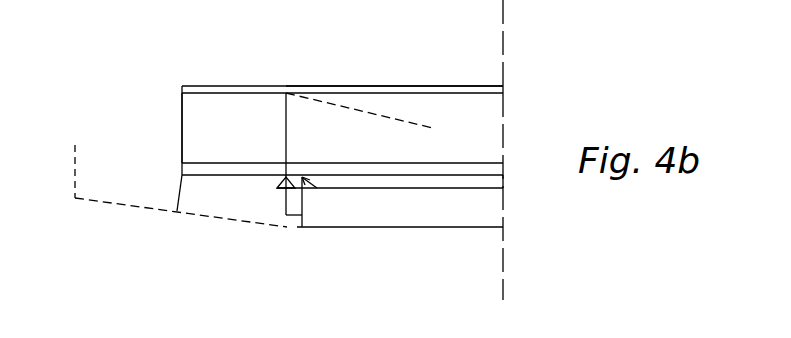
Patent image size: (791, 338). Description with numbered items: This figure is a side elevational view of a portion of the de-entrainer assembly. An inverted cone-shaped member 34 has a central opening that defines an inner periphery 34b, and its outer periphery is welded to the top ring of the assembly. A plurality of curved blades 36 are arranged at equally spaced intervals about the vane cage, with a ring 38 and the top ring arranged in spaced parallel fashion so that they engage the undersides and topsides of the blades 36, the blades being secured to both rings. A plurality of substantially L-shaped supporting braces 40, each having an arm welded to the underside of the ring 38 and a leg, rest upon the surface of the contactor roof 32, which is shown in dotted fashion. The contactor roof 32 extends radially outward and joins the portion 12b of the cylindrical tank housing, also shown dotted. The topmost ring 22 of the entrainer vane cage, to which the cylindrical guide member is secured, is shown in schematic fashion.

The portion of cylindrical tank housing 12b is at (69, 173).
The topmost ring of the entrainer vane cage 22 is at (286, 228).
The contactor roof 32 is at (233, 92).
The inverted cone-shaped member 34 is at (337, 86).
The inner periphery 34b is at (433, 128).
The curved blades 36 is at (193, 118).
The ring 38 is at (208, 163).
The L-shaped supporting braces 40 is at (189, 194).